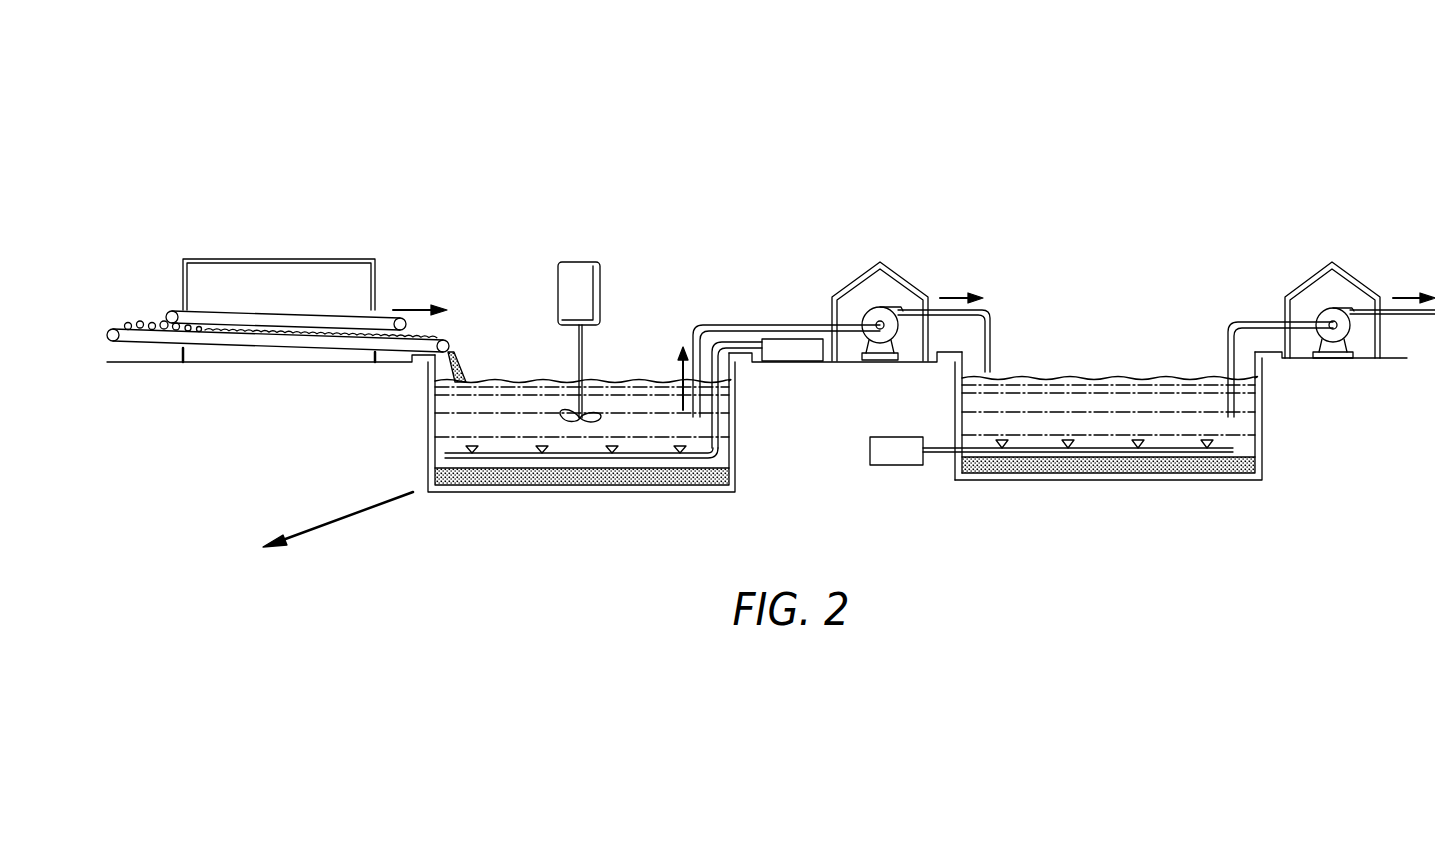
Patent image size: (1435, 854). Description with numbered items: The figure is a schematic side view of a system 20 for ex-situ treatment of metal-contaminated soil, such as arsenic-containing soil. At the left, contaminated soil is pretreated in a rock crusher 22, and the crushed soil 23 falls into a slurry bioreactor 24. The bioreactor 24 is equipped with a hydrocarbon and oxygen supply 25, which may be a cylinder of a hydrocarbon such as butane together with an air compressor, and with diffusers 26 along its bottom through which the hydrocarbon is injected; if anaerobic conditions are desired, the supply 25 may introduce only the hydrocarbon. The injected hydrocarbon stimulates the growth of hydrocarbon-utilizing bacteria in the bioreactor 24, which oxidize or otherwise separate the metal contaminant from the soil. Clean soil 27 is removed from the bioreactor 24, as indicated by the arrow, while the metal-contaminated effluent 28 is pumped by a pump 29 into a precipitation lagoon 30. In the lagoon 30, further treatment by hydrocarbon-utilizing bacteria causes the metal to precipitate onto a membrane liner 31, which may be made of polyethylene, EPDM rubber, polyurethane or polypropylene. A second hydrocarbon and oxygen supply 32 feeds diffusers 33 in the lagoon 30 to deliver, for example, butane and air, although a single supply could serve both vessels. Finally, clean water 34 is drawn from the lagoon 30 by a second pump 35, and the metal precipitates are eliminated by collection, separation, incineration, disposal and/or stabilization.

The system 20 is at (554, 147).
The rock crusher 22 is at (270, 283).
The crushed soil 23 is at (463, 367).
The slurry bioreactor 24 is at (448, 423).
The hydrocarbon and oxygen supply 25 is at (790, 361).
The diffusers 26 is at (670, 449).
The clean soil 27 is at (318, 527).
The metal-contaminated effluent 28 is at (682, 373).
The pump 29 is at (867, 305).
The precipitation lagoon 30 is at (1243, 442).
The membrane liner 31 is at (958, 420).
The hydrocarbon and oxygen supply 32 is at (900, 458).
The diffusers 33 is at (1055, 442).
The clean water 34 is at (1227, 352).
The pump 35 is at (1317, 303).